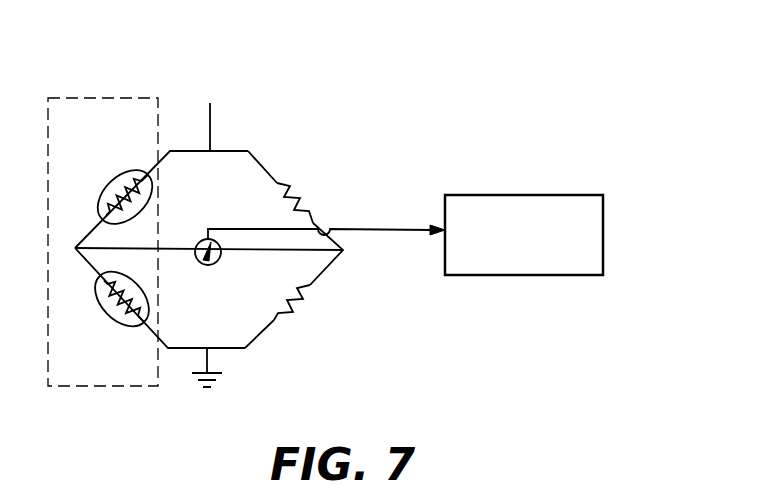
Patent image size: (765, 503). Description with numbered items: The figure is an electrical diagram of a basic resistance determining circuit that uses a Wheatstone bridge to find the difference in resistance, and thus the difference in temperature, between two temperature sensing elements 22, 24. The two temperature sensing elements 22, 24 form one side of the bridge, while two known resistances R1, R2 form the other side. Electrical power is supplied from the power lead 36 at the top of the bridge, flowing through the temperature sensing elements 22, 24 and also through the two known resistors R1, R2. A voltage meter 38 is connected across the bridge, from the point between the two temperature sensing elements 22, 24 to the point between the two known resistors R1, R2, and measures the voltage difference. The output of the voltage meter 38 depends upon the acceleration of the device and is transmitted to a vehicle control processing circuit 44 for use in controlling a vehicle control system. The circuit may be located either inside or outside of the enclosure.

The temperature sensing element 22 is at (121, 197).
The temperature sensing element 24 is at (123, 312).
The power lead 36 is at (210, 125).
The voltage meter 38 is at (211, 265).
The vehicle control processing circuit 44 is at (524, 235).
The known resistance R1 is at (311, 192).
The known resistance R2 is at (309, 309).